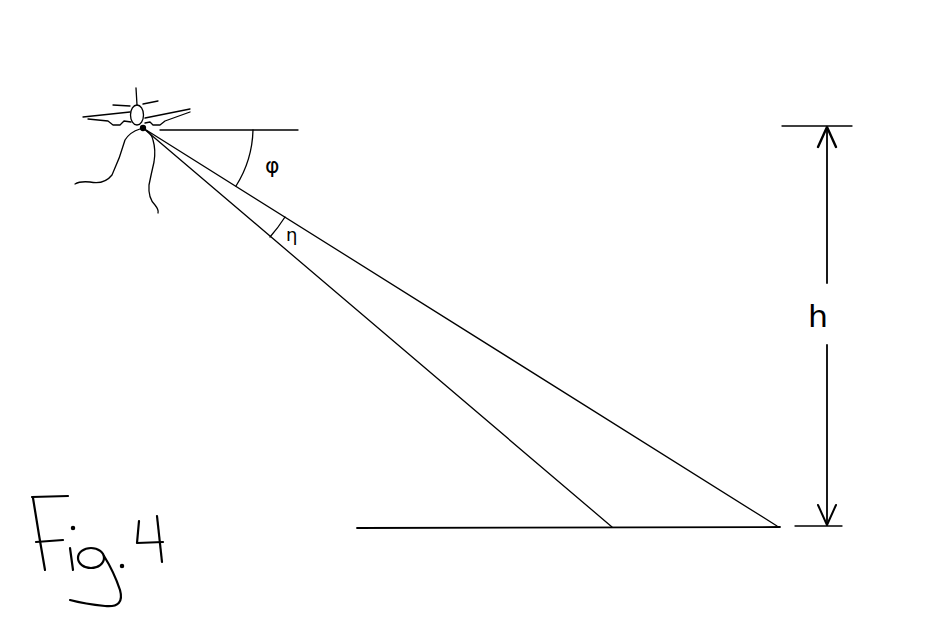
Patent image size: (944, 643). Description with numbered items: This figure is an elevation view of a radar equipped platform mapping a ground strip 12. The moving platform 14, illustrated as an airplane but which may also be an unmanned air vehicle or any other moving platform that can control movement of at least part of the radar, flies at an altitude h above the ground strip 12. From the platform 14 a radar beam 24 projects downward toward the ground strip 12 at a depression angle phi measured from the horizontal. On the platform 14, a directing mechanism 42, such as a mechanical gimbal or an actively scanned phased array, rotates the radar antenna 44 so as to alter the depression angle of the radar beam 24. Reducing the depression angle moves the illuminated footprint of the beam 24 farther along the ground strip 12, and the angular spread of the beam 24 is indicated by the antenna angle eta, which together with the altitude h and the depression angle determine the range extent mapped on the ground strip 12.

The moving platform 14 is at (130, 105).
The directing mechanism 42 is at (86, 172).
The radar antenna 44 is at (165, 199).
The radar beam 24 is at (474, 357).
The ground strip 12 is at (390, 528).